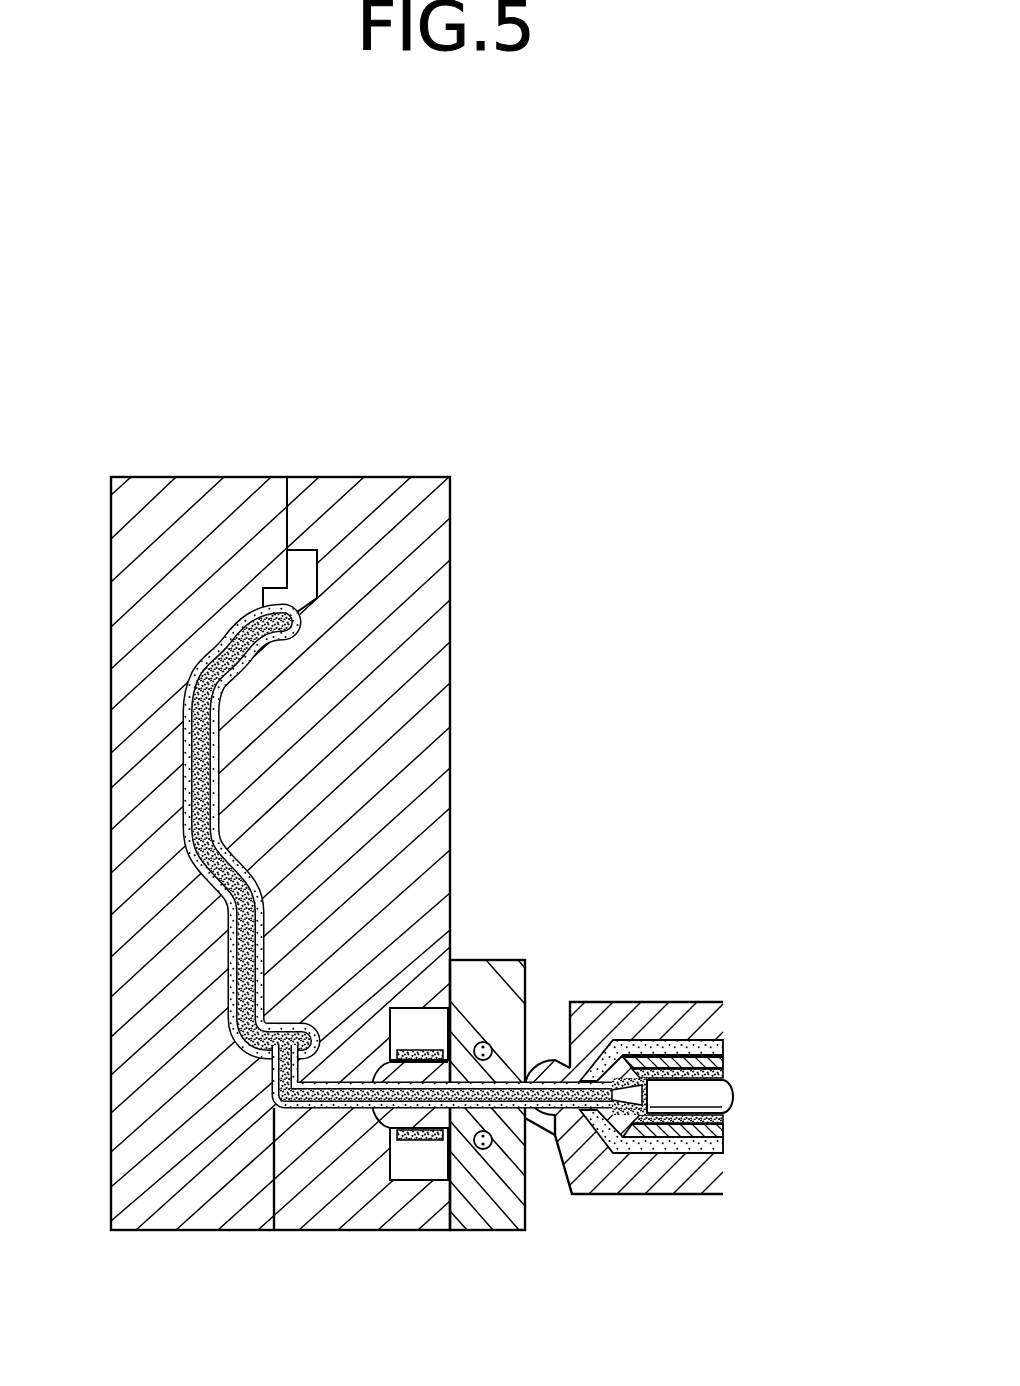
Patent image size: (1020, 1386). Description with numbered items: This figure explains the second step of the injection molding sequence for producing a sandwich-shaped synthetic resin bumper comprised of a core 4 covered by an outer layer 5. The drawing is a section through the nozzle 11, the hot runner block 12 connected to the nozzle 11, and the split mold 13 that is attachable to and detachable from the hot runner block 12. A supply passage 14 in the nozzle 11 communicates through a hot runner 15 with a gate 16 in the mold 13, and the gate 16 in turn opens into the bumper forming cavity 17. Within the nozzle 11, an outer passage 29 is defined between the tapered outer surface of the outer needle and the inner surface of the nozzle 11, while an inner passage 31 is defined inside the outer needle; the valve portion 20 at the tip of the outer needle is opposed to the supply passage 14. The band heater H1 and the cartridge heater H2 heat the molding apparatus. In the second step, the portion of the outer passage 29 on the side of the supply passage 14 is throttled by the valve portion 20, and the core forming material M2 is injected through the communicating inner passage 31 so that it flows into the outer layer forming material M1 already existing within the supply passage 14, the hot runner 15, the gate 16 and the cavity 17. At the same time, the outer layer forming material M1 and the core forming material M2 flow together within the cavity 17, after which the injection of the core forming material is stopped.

The split mold 13 is at (452, 637).
The outer layer forming material M1 is at (262, 907).
The core forming material M2 is at (330, 1108).
The outer layer 5 is at (190, 692).
The core 4 is at (196, 735).
The bumper forming cavity 17 is at (190, 833).
The hot runner block 12 is at (508, 1230).
The gate 16 is at (355, 1110).
The band heater H1 is at (411, 1050).
The cartridge heater H2 is at (485, 1042).
The nozzle 11 is at (628, 1015).
The supply passage 14 is at (547, 1062).
The outer passage 29 is at (686, 1045).
The valve portion 20 is at (598, 1120).
The hot runner 15 is at (460, 1108).
The inner passage 31 is at (672, 1107).